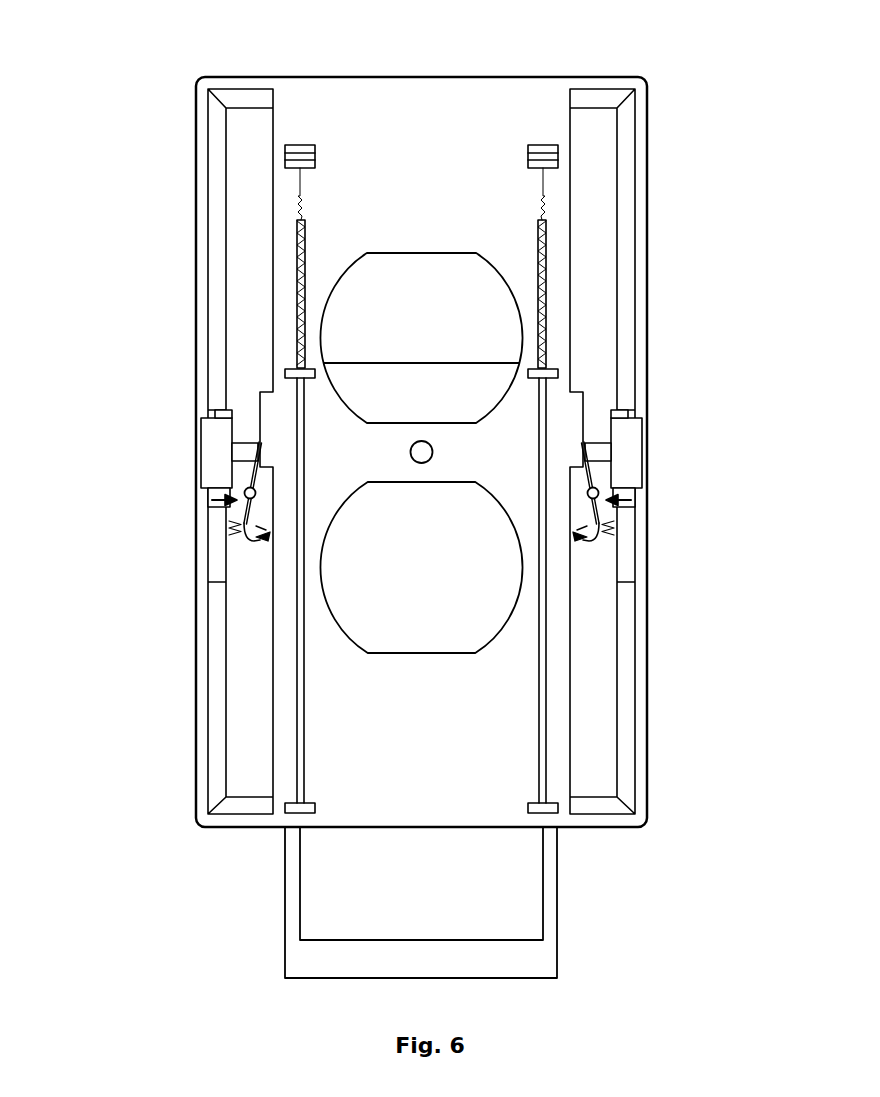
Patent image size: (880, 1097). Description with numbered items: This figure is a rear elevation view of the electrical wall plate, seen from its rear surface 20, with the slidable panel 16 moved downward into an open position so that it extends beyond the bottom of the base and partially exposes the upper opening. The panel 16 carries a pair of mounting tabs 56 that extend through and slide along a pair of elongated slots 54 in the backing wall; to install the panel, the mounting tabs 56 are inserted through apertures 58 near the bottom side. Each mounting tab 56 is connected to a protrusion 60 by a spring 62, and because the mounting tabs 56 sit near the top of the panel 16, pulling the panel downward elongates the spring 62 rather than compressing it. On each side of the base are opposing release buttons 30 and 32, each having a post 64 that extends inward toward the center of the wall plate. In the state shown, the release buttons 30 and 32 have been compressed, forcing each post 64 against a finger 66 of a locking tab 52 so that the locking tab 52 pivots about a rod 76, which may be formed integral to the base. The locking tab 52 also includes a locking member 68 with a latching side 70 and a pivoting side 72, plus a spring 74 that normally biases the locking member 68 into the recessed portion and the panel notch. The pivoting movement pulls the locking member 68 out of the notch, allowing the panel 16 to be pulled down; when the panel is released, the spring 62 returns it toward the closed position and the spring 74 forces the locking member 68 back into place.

The slidable panel 16 is at (469, 886).
The rear surface 20 is at (472, 725).
The release button 30 is at (210, 442).
The release button 32 is at (633, 442).
The locking tab 52 is at (270, 535).
The elongated slot 54 is at (300, 722).
The mounting tab 56 is at (290, 372).
The aperture 58 is at (285, 808).
The protrusion 60 is at (299, 148).
The spring 62 is at (302, 216).
The post 64 is at (243, 450).
The finger 66 is at (236, 462).
The locking member 68 is at (250, 540).
The latching side 70 is at (262, 528).
The pivoting side 72 is at (260, 540).
The spring 74 is at (230, 535).
The rod 76 is at (246, 491).